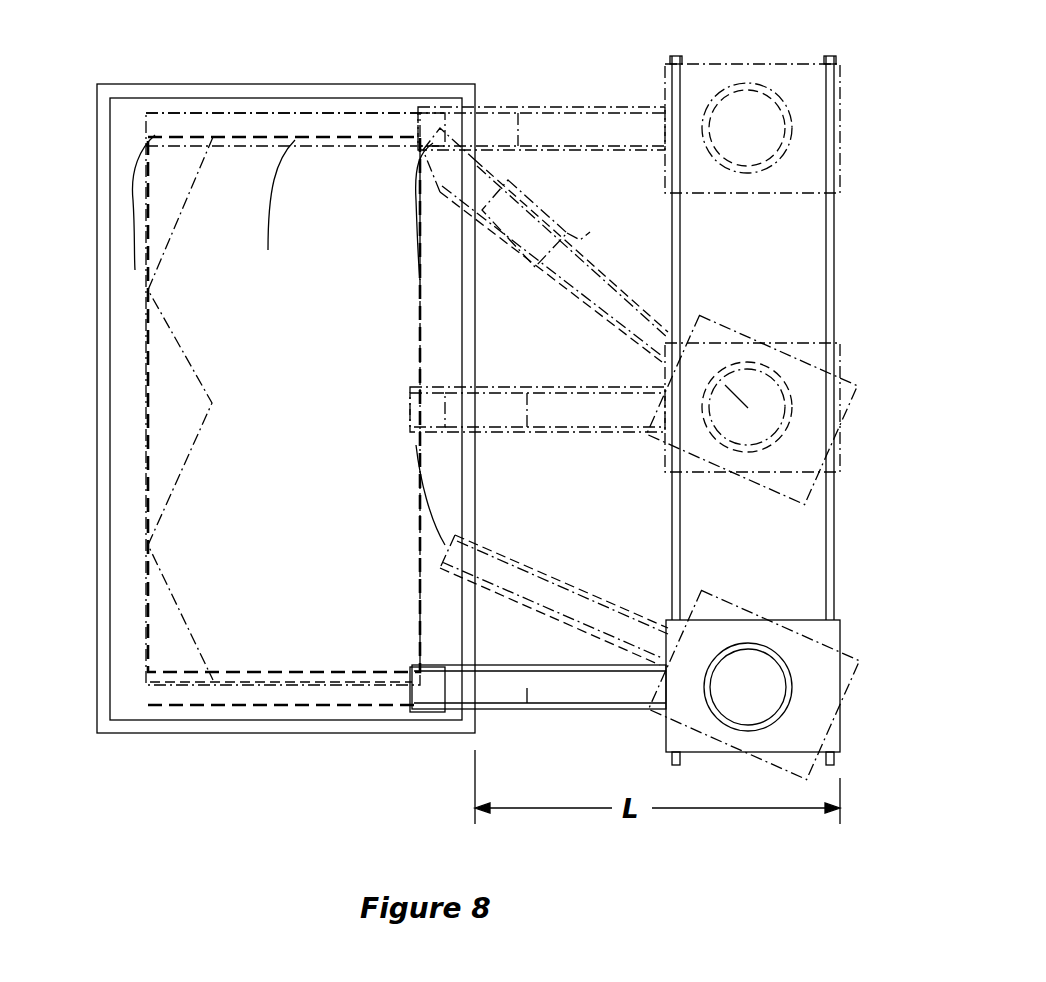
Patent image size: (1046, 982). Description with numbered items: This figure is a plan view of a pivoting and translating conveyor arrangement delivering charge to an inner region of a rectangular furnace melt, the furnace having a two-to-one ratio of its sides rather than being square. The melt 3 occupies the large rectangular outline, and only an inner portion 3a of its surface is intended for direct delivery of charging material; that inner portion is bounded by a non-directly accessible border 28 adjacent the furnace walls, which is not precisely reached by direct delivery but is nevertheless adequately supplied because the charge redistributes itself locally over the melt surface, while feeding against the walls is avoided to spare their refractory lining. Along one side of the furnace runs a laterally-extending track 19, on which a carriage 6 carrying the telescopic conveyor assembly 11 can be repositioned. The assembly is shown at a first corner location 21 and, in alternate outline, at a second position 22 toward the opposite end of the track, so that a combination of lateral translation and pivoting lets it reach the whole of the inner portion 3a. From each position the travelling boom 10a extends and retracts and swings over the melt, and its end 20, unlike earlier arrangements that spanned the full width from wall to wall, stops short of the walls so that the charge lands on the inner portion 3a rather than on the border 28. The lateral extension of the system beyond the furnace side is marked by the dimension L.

The melt 3 is at (155, 135).
The inner portion of the melt surface 3a is at (295, 140).
The carriage 6 is at (840, 735).
The travelling boom 10a is at (255, 705).
The telescopic conveyor assembly 11 is at (557, 682).
The laterally-extending track 19 is at (835, 247).
The end of the travelling boom 20 is at (410, 685).
The first corner location 21 is at (748, 690).
The second position 22 is at (740, 128).
The non-directly accessible border 28 is at (128, 455).